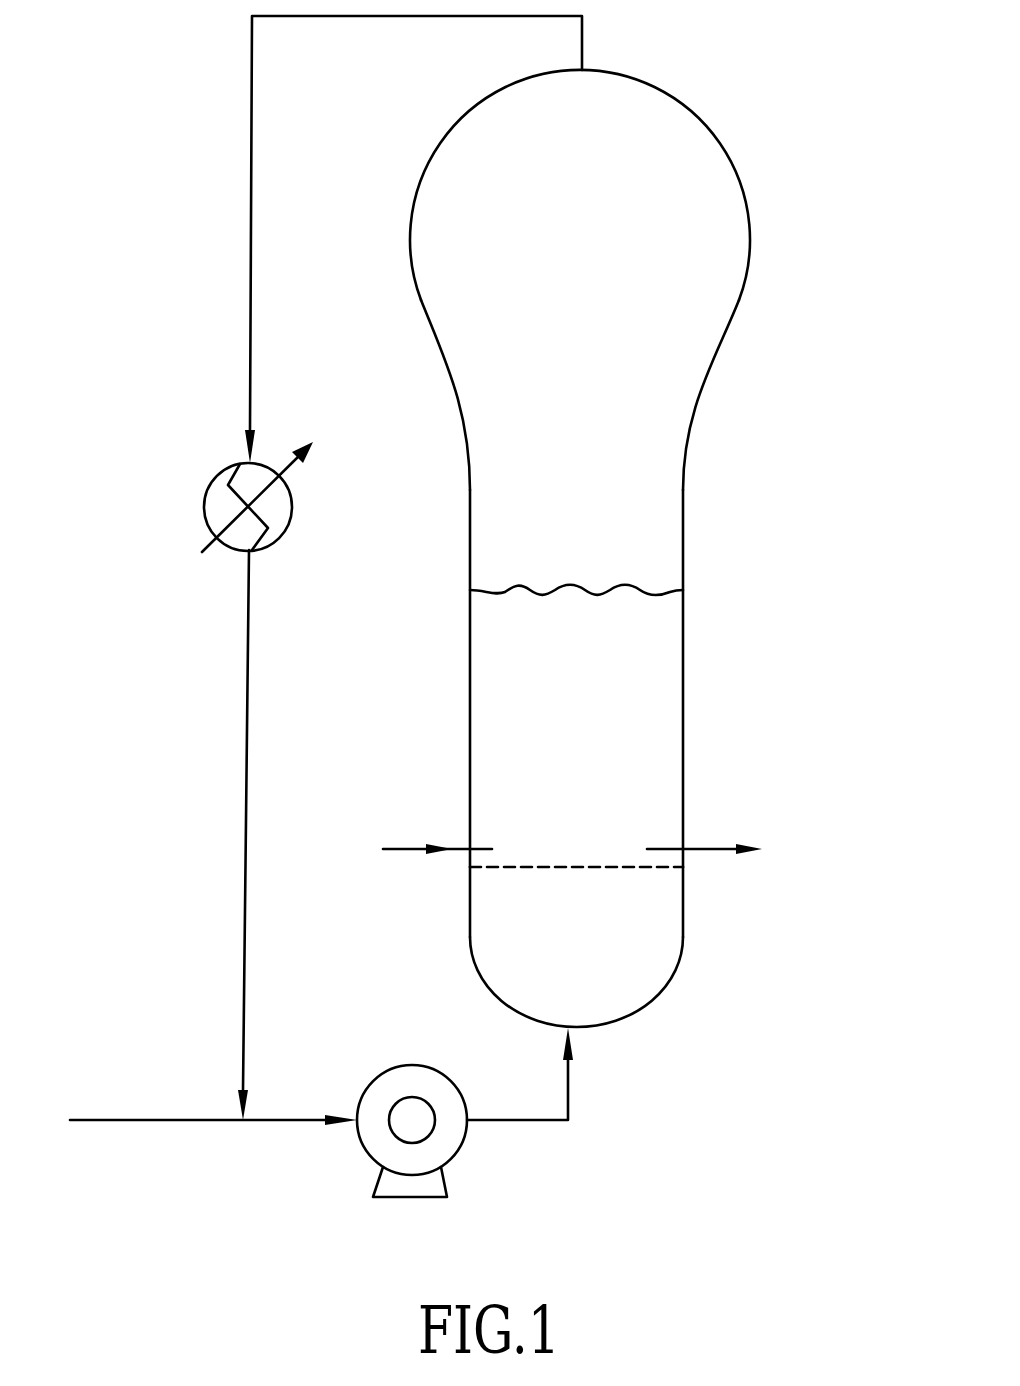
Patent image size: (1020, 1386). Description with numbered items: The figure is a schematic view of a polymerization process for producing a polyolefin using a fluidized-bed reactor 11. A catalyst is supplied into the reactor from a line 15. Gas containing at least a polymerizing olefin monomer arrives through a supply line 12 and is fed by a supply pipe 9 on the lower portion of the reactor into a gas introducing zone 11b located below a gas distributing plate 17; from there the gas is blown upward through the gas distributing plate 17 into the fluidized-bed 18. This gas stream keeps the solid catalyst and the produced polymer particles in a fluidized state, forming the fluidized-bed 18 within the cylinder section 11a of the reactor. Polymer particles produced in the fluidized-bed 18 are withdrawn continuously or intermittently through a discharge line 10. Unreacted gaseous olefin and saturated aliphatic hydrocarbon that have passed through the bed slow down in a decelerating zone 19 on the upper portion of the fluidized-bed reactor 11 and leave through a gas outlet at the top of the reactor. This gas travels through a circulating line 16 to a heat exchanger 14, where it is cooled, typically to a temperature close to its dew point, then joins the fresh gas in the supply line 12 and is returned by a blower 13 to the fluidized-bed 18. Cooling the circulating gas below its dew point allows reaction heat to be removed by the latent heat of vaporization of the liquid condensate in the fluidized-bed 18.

The supply pipe 9 is at (568, 1093).
The discharge line 10 is at (707, 850).
The fluidized-bed reactor 11 is at (637, 555).
The cylinder section 11a is at (673, 960).
The gas introducing zone 11b is at (603, 977).
The supply line 12 is at (170, 1123).
The blower 13 is at (407, 1187).
The heat exchanger 14 is at (203, 507).
The line 15 is at (403, 848).
The circulating line 16 is at (252, 140).
The gas distributing plate 17 is at (535, 870).
The fluidized-bed 18 is at (643, 685).
The decelerating zone 19 is at (713, 310).